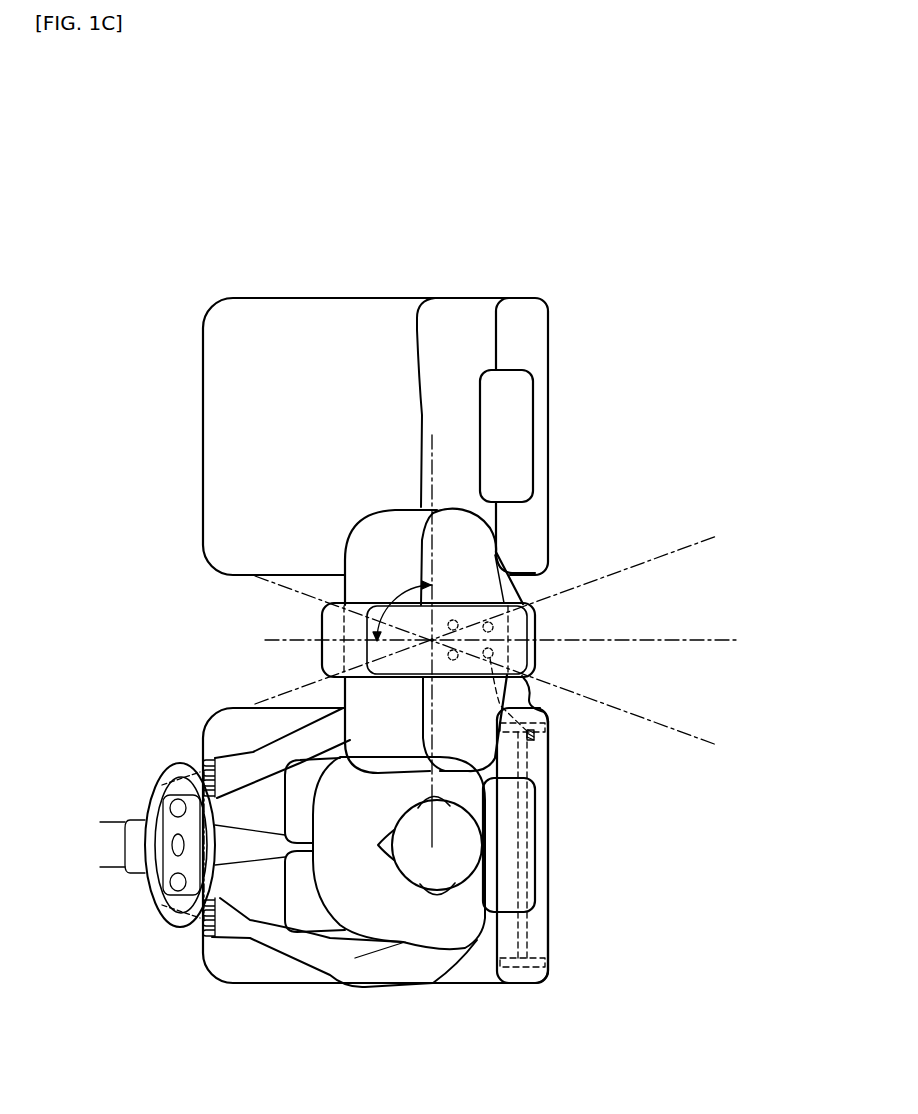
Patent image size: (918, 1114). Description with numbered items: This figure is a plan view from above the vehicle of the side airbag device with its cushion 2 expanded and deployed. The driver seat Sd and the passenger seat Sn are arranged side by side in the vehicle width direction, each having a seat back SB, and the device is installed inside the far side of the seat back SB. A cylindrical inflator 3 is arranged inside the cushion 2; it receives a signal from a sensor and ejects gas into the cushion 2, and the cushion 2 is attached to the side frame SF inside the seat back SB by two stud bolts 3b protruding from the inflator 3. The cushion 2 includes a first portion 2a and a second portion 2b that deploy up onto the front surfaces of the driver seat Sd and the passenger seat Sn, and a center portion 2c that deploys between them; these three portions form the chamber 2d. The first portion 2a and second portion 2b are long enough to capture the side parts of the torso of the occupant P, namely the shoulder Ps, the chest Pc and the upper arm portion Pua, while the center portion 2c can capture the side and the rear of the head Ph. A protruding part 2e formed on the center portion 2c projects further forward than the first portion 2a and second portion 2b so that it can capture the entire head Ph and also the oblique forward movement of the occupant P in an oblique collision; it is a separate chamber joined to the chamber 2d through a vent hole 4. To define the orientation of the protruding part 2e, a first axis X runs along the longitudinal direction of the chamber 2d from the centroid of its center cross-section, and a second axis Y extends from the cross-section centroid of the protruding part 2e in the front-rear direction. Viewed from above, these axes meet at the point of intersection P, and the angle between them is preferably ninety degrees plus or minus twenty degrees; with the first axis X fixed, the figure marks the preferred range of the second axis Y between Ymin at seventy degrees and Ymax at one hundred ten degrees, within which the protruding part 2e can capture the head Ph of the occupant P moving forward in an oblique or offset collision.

The passenger seat Sn is at (367, 287).
The seat back SB is at (527, 328).
The driver seat Sd is at (432, 992).
The inflator 3 is at (553, 842).
The stud bolts 3b is at (537, 737).
The side frame SF is at (497, 745).
The cushion 2 is at (543, 632).
The protruding part 2e is at (533, 645).
The chamber 2d is at (336, 641).
The first portion 2a is at (372, 723).
The second portion 2b is at (368, 560).
The center portion 2c is at (370, 632).
The first axis X is at (434, 462).
The second axis Y is at (688, 640).
The maximum range of the second axis Ymax is at (663, 548).
The minimum range of the second axis Ymin is at (670, 723).
The vent hole 4 is at (457, 620).
The point of intersection P is at (499, 743).
The chest Pc is at (378, 862).
The head Ph is at (465, 845).
The upper arm portion Pua is at (402, 970).
The shoulder Ps is at (460, 922).